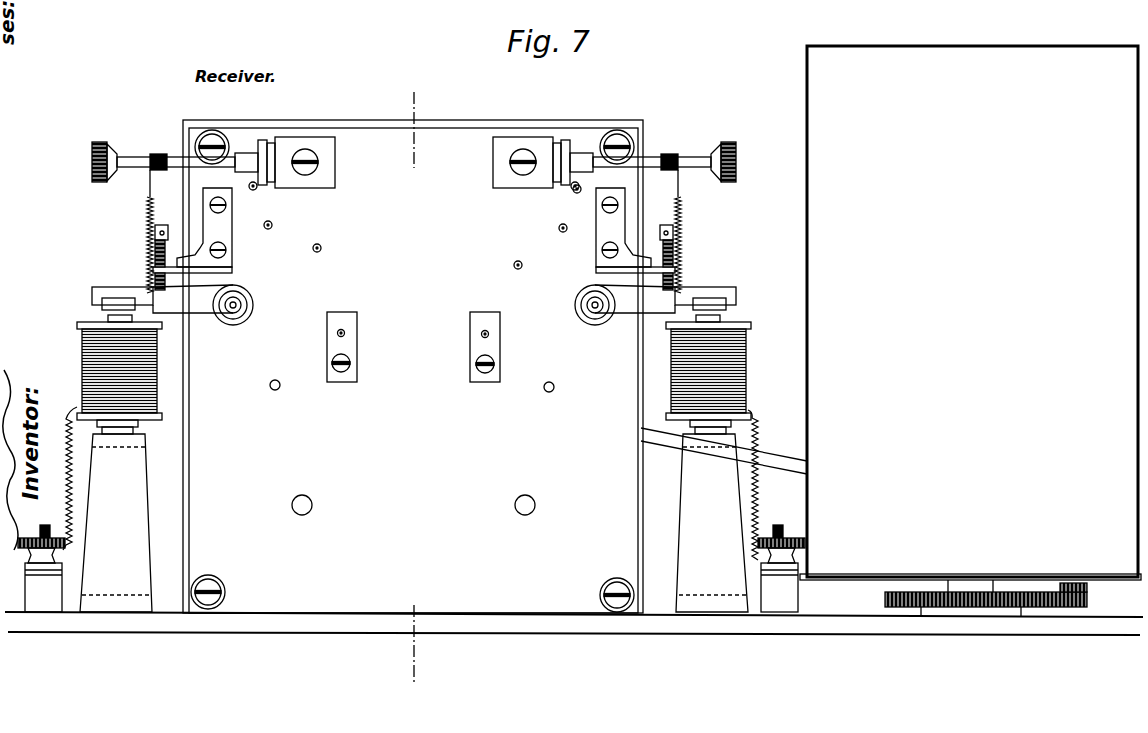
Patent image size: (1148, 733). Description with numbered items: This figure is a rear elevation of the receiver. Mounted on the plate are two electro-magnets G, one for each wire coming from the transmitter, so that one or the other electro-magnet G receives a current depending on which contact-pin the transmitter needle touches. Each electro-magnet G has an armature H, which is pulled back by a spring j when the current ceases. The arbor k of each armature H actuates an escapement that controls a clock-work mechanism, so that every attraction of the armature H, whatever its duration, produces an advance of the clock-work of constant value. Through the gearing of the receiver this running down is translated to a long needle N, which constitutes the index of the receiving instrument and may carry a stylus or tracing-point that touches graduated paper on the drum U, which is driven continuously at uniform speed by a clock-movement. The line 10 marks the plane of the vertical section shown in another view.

The section line 10 10 is at (432, 91).
The spring j is at (411, 231).
The armature H is at (414, 292).
The arbor k is at (253, 312).
The electro-magnet G is at (409, 463).
The needle N is at (724, 452).
The drum U is at (970, 331).